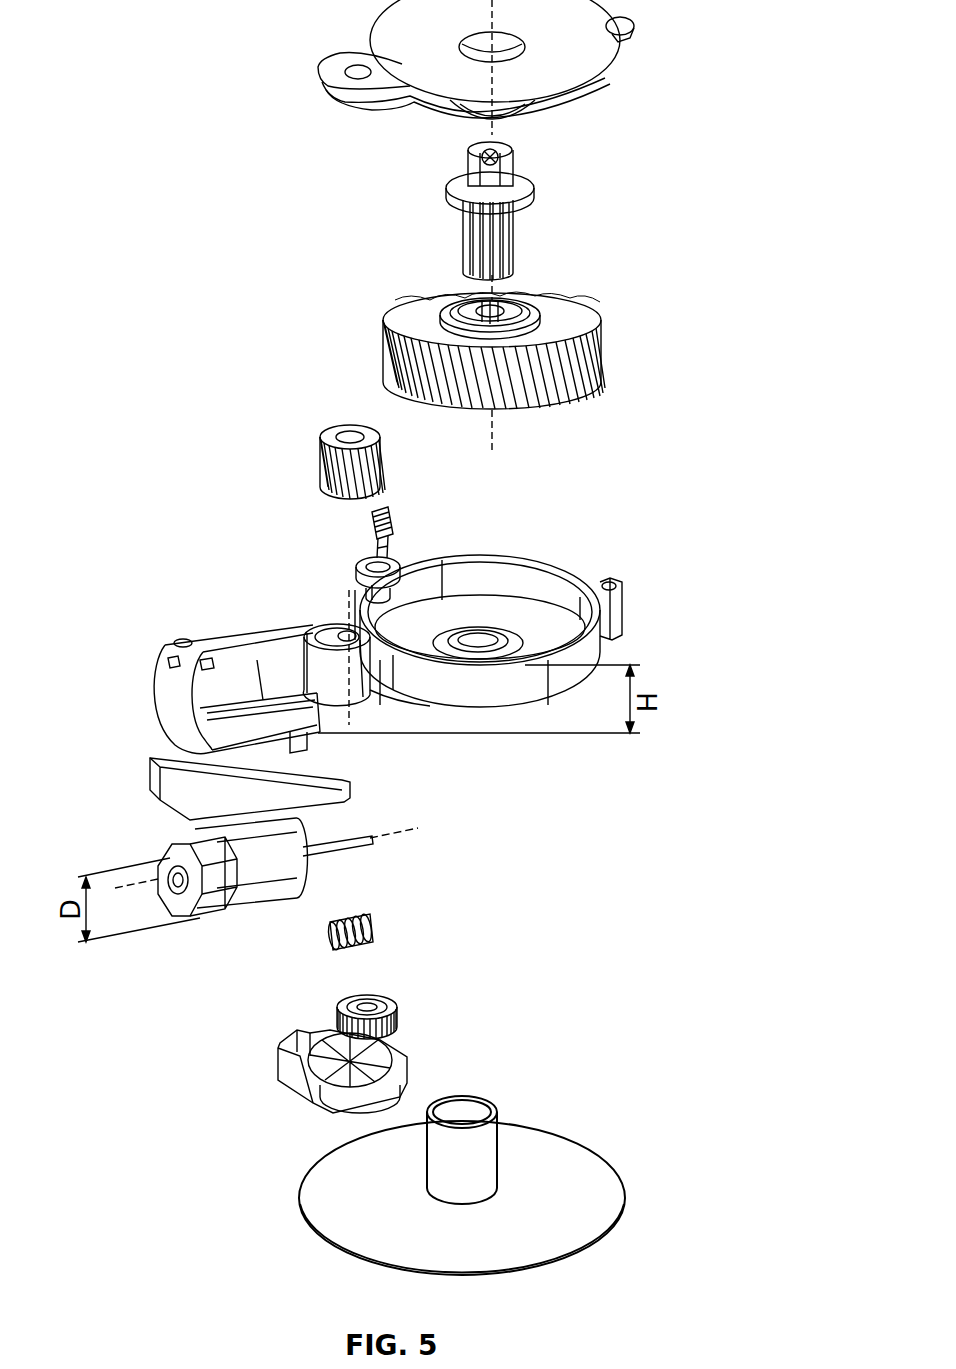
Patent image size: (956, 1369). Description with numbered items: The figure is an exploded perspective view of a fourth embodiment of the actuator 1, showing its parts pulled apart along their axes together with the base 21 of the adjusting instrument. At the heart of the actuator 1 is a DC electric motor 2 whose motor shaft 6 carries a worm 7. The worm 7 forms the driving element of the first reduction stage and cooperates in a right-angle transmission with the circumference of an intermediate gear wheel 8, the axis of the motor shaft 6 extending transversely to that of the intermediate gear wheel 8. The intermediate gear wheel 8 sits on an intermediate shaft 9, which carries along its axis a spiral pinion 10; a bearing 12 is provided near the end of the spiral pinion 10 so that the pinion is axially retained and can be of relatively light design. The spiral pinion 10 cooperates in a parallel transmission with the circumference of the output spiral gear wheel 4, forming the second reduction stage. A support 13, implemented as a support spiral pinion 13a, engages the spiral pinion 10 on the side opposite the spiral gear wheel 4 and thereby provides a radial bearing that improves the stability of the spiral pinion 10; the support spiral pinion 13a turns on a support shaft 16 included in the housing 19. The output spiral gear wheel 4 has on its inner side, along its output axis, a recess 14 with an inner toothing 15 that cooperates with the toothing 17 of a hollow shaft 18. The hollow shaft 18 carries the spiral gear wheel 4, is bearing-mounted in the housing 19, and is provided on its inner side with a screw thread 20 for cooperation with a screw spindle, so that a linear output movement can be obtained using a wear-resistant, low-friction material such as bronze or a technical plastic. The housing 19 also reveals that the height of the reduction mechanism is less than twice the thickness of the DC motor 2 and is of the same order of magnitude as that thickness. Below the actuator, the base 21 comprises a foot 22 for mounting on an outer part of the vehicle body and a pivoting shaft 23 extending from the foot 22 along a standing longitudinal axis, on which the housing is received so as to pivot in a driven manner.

The actuator 1 is at (256, 180).
The DC electric motor 2 is at (235, 903).
The output spiral gear wheel 4 is at (515, 327).
The motor shaft 6 is at (362, 847).
The worm 7 is at (374, 925).
The intermediate gear wheel 8 is at (399, 1012).
The intermediate shaft 9 is at (368, 585).
The spiral pinion 10 is at (387, 542).
The bearing 12 is at (387, 512).
The support 13 is at (298, 439).
The support spiral pinion 13a is at (335, 425).
The recess 14 is at (458, 305).
The inner toothing 15 is at (522, 308).
The support shaft 16 is at (335, 632).
The toothing 17 is at (513, 230).
The hollow shaft 18 is at (513, 158).
The housing 19 is at (236, 638).
The screw thread 20 is at (467, 142).
The base 21 is at (449, 1180).
The foot 22 is at (575, 1188).
The pivoting shaft 23 is at (487, 1140).